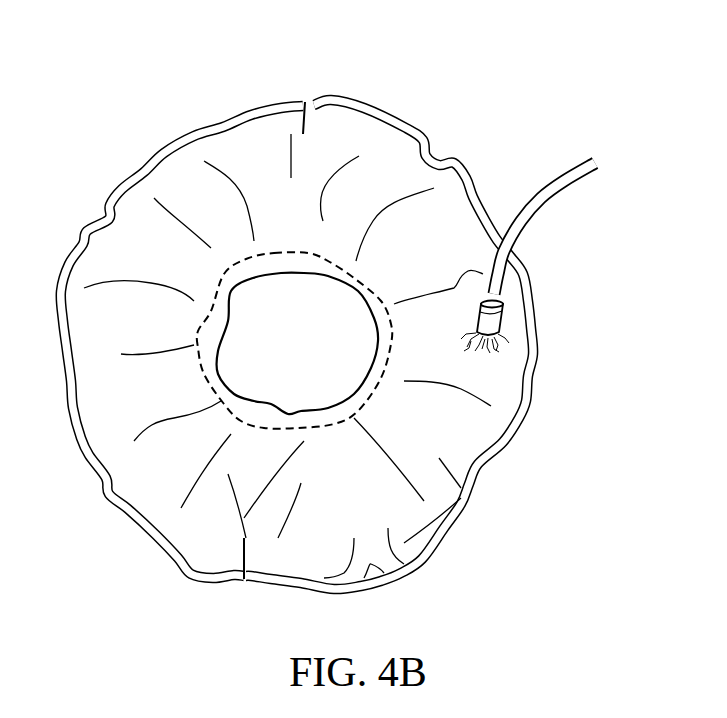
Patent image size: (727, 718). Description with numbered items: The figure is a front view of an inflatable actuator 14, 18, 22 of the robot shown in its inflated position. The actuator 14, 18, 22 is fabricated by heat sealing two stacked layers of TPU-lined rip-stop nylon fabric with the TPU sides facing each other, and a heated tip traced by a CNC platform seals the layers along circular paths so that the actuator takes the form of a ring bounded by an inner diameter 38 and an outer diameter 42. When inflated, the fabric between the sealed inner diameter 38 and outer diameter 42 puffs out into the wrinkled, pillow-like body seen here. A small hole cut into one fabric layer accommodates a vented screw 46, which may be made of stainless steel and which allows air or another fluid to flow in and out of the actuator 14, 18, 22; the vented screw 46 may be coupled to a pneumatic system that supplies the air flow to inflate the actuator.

The inflatable actuator 14 is at (289, 304).
The inflatable actuator 18 is at (289, 344).
The inflatable actuator 22 is at (289, 344).
The inner diameter 38 is at (267, 397).
The outer diameter 42 is at (107, 224).
The vented screw 46 is at (487, 322).